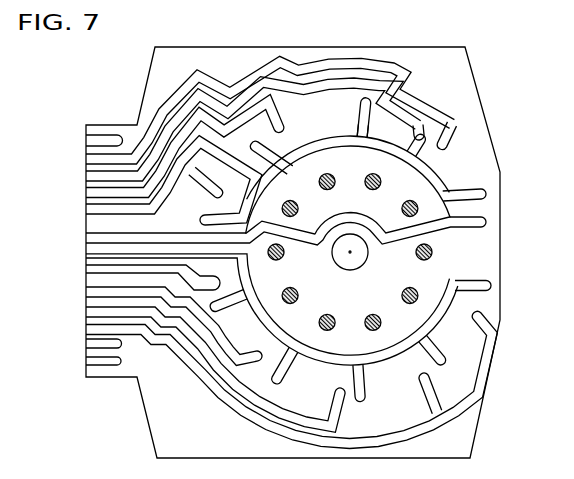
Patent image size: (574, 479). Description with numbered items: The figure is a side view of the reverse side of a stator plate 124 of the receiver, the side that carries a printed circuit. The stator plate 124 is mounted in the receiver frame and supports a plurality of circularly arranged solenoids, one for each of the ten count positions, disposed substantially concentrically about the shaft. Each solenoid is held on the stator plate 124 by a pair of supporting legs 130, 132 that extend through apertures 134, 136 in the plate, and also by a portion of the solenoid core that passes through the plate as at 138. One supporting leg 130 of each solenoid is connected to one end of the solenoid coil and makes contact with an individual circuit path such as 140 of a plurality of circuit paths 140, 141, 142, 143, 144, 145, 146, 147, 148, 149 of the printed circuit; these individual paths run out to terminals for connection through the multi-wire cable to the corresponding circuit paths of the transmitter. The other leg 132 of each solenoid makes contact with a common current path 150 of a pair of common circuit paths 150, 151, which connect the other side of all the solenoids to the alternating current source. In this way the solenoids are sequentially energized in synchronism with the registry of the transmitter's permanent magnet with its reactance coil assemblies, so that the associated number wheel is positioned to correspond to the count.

The stator plate 124 is at (223, 53).
The supporting leg 130 is at (365, 100).
The supporting leg 132 is at (450, 124).
The aperture 134 is at (371, 108).
The aperture 136 is at (424, 117).
The core portion 138 is at (404, 207).
The common circuit path 150 is at (302, 152).
The common circuit path 151 is at (280, 333).
The circuit path 141 is at (87, 157).
The circuit path 140 is at (90, 173).
The circuit path 149 is at (90, 191).
The circuit path 148 is at (92, 211).
The circuit path 142 is at (93, 238).
The circuit path 147 is at (92, 267).
The circuit path 146 is at (92, 287).
The circuit path 145 is at (92, 305).
The circuit path 144 is at (90, 321).
The circuit path 143 is at (92, 330).